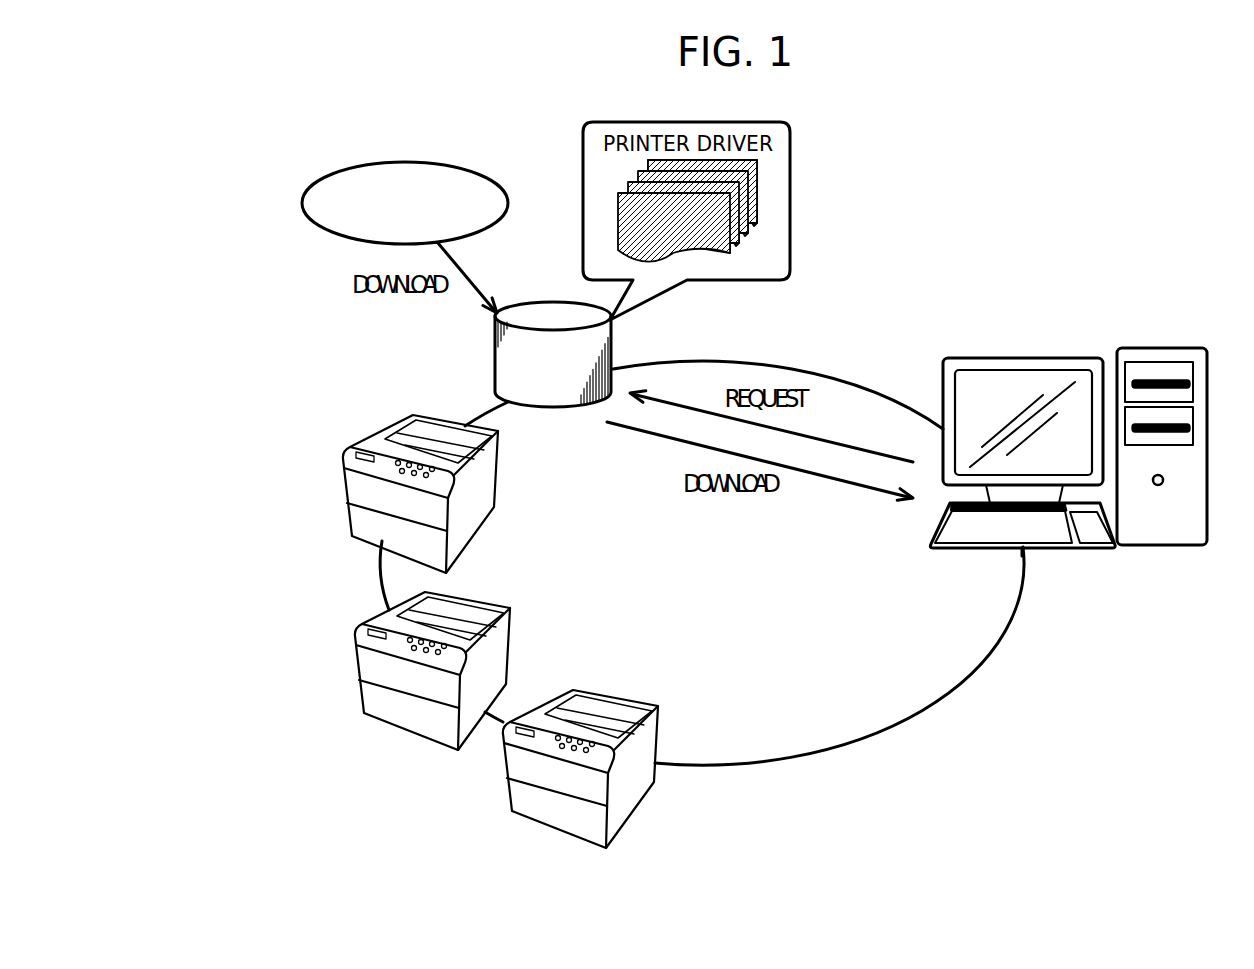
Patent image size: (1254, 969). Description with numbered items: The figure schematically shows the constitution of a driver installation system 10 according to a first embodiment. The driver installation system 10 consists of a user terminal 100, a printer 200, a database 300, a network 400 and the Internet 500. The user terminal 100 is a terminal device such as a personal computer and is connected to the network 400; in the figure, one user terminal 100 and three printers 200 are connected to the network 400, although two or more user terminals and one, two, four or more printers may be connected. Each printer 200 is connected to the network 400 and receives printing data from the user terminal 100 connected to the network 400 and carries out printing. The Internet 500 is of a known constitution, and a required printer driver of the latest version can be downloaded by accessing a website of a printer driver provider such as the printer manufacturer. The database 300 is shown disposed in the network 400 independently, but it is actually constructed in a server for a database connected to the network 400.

The driver installation system 10 is at (937, 228).
The user terminal 100 is at (1011, 356).
The printer 200 is at (525, 818).
The database 300 is at (495, 343).
The network 400 is at (902, 722).
The Internet 500 is at (335, 172).